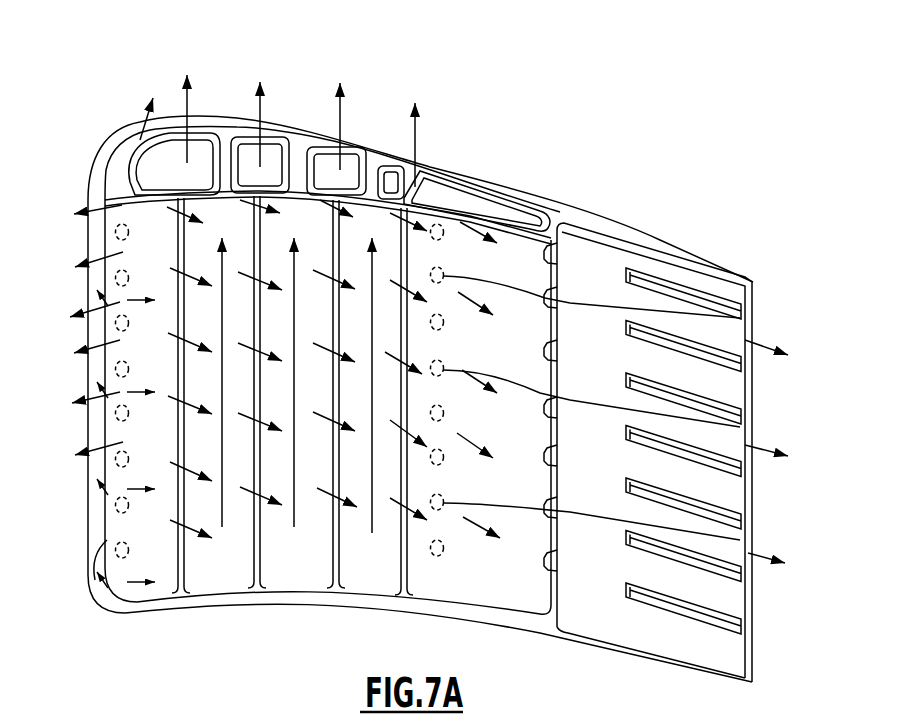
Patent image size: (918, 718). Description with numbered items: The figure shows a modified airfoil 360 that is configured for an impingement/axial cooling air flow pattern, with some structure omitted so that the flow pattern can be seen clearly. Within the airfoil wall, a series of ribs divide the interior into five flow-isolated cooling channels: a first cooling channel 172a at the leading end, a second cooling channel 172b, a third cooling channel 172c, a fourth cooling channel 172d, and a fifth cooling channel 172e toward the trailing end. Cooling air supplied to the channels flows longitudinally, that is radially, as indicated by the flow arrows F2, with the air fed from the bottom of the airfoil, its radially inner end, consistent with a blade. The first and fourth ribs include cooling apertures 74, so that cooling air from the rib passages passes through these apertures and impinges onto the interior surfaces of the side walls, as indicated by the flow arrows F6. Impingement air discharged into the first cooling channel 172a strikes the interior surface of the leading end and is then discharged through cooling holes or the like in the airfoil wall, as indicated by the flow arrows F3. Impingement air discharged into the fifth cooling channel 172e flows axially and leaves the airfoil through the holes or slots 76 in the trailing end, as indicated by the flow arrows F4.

The airfoil 360 is at (624, 190).
The first cooling channel 172a is at (130, 155).
The second cooling channel 172b is at (224, 133).
The third cooling channel 172c is at (303, 144).
The fourth cooling channel 172d is at (377, 163).
The fifth cooling channel 172e is at (487, 197).
The holes or slots 76 is at (757, 340).
The cooling apertures 74 is at (113, 507).
The flow arrows F2 is at (372, 533).
The flow arrows F3 is at (97, 350).
The flow arrows F4 is at (760, 350).
The flow arrows F6 is at (150, 488).